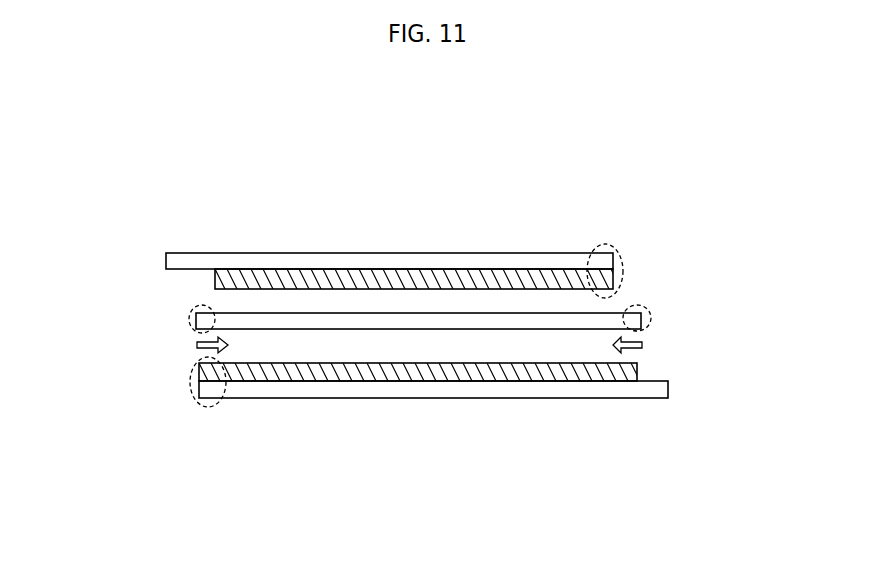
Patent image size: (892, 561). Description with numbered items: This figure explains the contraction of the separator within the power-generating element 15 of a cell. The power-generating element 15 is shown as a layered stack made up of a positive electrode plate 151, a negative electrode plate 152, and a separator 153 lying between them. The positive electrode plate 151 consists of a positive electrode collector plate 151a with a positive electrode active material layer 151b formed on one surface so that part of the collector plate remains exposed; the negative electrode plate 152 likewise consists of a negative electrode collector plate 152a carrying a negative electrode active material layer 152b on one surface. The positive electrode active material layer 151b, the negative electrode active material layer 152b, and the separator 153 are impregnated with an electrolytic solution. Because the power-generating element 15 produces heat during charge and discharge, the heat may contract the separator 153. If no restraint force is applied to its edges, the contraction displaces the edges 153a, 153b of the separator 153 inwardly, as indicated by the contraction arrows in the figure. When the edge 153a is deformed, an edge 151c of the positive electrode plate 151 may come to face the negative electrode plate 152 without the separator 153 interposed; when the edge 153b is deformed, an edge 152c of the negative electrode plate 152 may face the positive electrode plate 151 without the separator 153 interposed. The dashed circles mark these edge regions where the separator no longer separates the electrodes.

The power-generating element 15 is at (453, 216).
The positive electrode plate 151 is at (357, 178).
The positive electrode collector plate 151a is at (273, 262).
The positive electrode active material layer 151b is at (338, 274).
The edge of the positive electrode plate 151c is at (620, 249).
The negative electrode plate 152 is at (522, 475).
The negative electrode collector plate 152a is at (493, 390).
The negative electrode active material layer 152b is at (433, 372).
The edge of the negative electrode plate 152c is at (191, 396).
The separator 153 is at (538, 325).
The edge of the separator 153a is at (649, 306).
The edge of the separator 153b is at (190, 312).